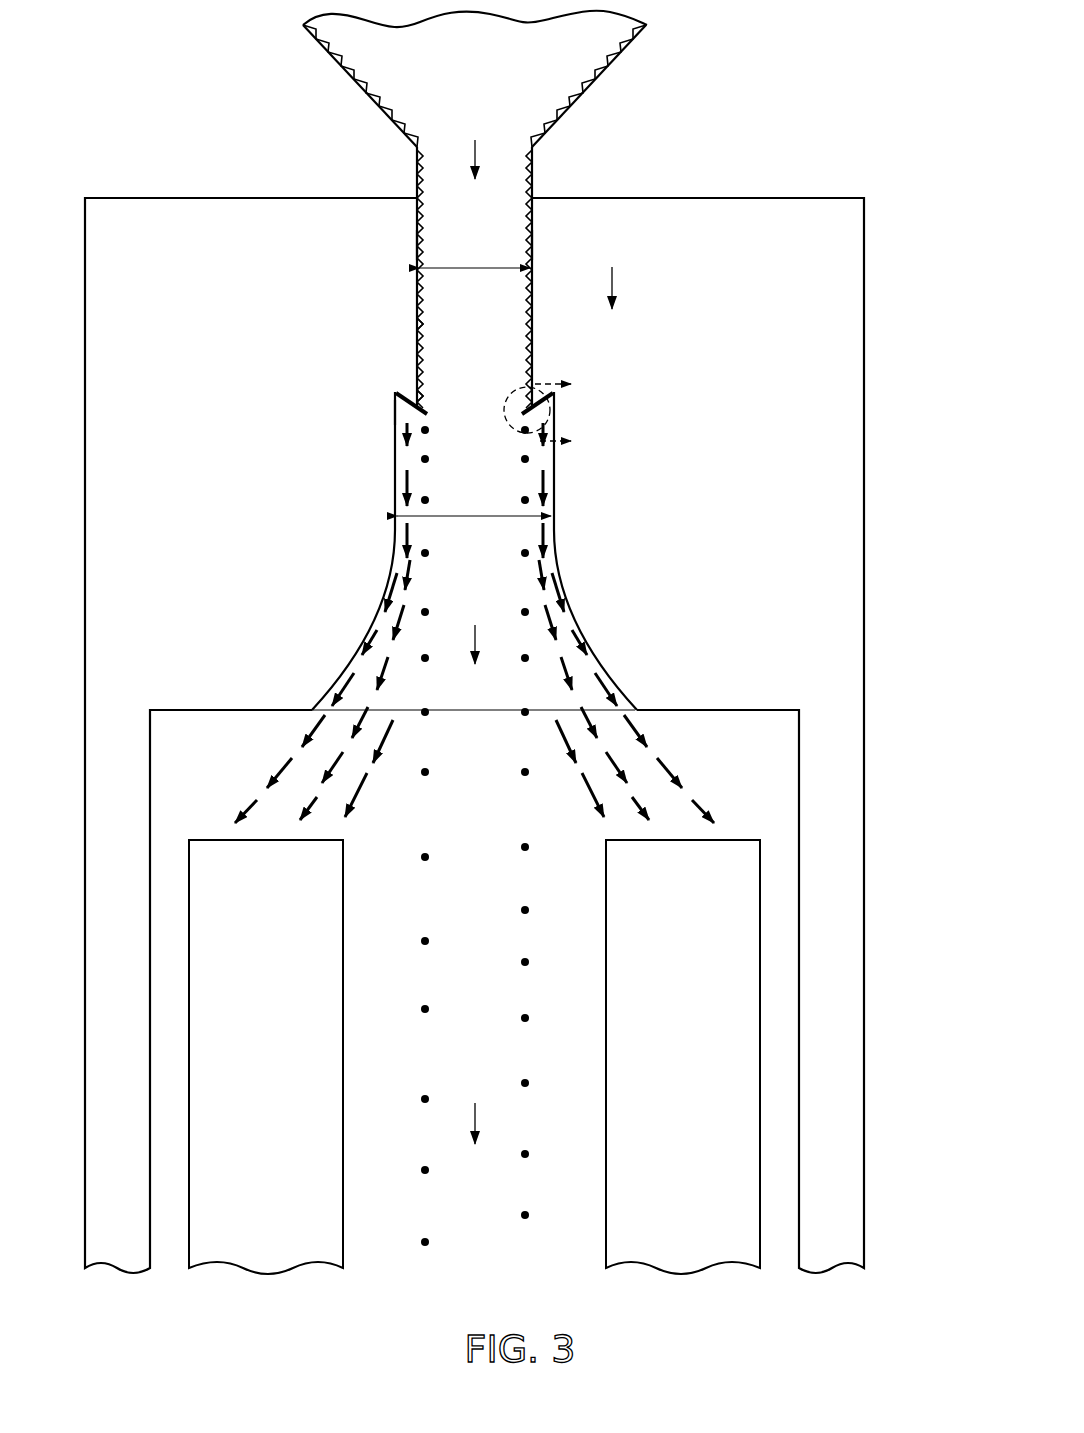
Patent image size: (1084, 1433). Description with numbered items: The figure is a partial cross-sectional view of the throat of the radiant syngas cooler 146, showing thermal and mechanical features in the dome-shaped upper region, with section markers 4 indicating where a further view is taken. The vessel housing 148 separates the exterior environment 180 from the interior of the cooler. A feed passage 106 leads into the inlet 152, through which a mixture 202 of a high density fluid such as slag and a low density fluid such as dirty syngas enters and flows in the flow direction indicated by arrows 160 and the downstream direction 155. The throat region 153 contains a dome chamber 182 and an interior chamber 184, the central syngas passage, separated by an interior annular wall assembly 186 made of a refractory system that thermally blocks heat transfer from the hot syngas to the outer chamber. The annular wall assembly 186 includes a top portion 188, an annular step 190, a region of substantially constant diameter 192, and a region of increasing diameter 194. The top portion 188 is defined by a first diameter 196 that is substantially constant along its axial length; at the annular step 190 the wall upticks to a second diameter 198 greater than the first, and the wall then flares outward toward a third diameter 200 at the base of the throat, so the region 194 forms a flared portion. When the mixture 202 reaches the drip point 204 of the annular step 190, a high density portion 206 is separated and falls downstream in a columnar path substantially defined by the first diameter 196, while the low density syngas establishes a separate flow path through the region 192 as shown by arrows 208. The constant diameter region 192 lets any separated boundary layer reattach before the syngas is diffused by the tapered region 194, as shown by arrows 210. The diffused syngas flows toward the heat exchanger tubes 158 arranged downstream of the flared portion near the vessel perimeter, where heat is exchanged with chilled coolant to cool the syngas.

The section line 4- 4 is at (551, 413).
The material supply hopper 106 is at (616, 62).
The radiant syngas cooler 146 is at (691, 144).
The vessel housing 148 is at (864, 318).
The inlet 152 is at (537, 186).
The throat region 153 is at (326, 431).
The downstream direction 155 is at (614, 272).
The heat exchanger tubes 158 is at (238, 1042).
The flow direction arrows 160 is at (477, 152).
The exterior environment 180 is at (888, 213).
The dome chamber 182 is at (674, 473).
The interior chamber 184 is at (588, 660).
The annular wall assembly 186 is at (413, 243).
The top portion 188 is at (413, 321).
The annular step 190 is at (407, 389).
The region of substantially constant diameter 192 is at (392, 412).
The region of increasing diameter 194 is at (354, 634).
The first diameter 196 is at (475, 266).
The second diameter 198 is at (474, 518).
The third diameter 200 is at (474, 713).
The mixture 202 is at (368, 95).
The drip point 204 is at (520, 413).
The high density portion 206 is at (520, 460).
The low density flow path arrows 208 is at (398, 445).
The diffused syngas arrows 210 is at (392, 580).